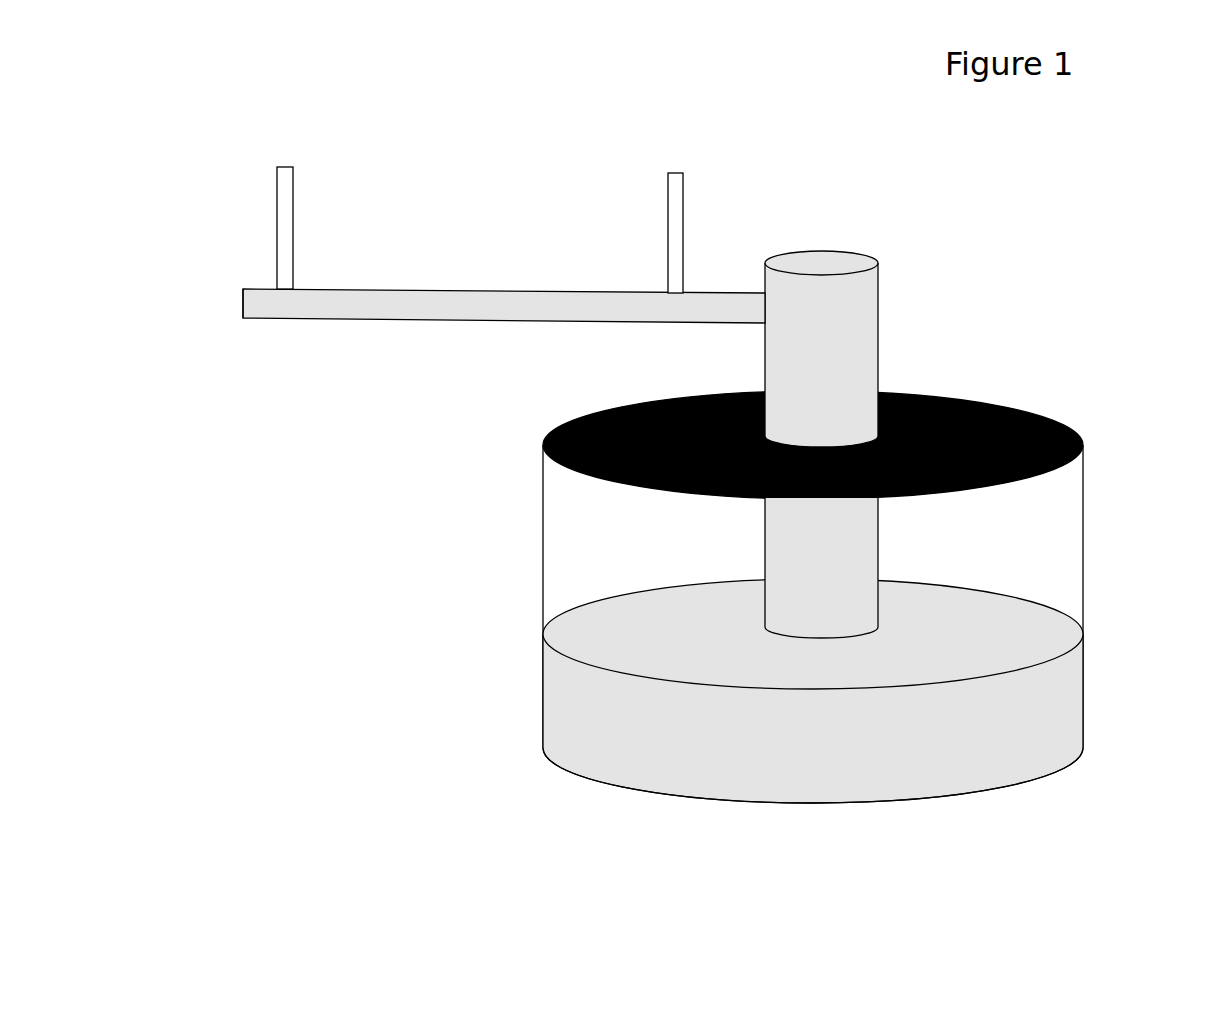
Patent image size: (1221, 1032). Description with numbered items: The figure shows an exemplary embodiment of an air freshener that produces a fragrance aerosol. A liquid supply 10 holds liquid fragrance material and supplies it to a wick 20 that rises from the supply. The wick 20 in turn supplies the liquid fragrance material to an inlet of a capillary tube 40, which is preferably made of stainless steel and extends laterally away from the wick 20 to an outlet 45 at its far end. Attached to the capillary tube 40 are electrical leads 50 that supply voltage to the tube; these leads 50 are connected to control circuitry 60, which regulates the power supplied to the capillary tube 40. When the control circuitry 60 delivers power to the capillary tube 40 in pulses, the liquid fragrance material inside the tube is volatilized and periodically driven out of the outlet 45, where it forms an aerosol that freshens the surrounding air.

The liquid supply 10 is at (1084, 693).
The wick 20 is at (879, 527).
The capillary tube 40 is at (327, 319).
The outlet 45 is at (242, 294).
The electrical leads 50 is at (276, 192).
The control circuitry 60 is at (481, 86).